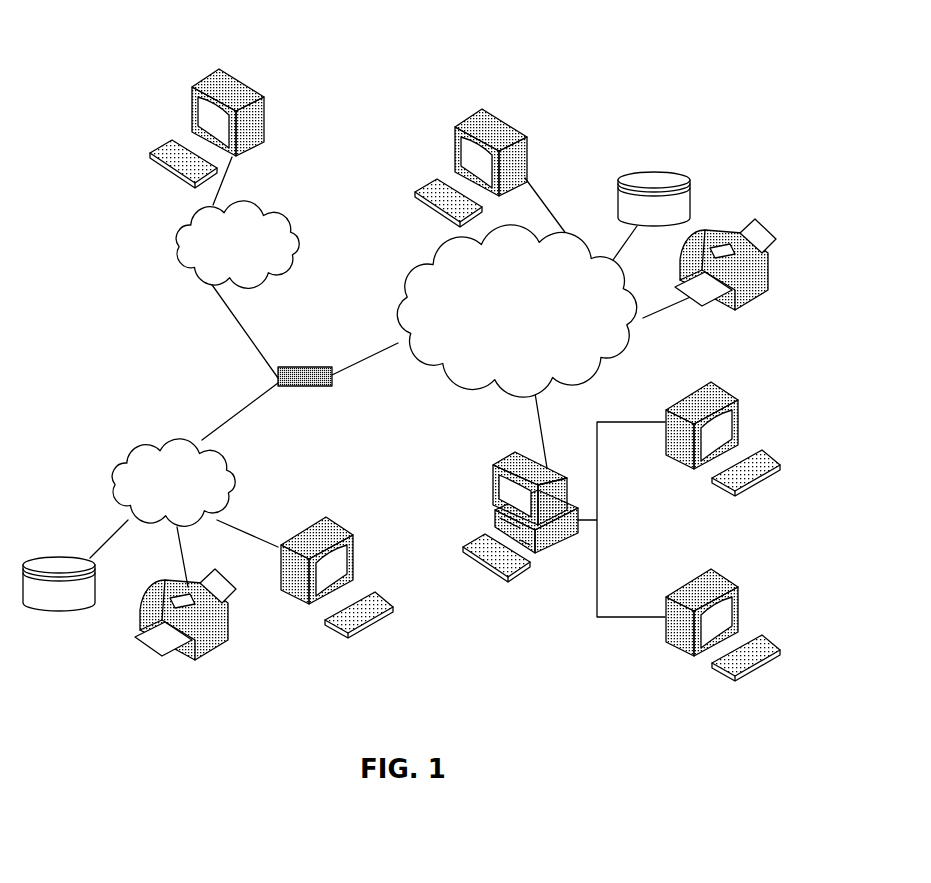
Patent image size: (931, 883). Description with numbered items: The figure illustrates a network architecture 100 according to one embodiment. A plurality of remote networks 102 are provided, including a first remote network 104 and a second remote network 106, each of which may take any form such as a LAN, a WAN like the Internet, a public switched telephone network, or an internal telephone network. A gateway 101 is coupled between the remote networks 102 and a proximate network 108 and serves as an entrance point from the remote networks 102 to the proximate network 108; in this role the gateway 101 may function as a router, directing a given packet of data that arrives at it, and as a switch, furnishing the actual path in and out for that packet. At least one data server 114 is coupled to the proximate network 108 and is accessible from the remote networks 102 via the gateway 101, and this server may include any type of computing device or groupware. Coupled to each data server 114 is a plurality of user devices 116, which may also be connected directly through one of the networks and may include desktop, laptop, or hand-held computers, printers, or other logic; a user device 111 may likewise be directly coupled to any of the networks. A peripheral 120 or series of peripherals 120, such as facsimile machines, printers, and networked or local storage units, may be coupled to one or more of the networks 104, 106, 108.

The architecture 100 is at (140, 61).
The gateway 101 is at (300, 366).
The remote networks 102 is at (160, 292).
The first remote network 104 is at (108, 460).
The second remote network 106 is at (300, 220).
The proximate network 108 is at (608, 368).
The user device 111 is at (530, 133).
The data server 114 is at (507, 480).
The user devices 116 is at (265, 104).
The peripheral 120 is at (688, 178).